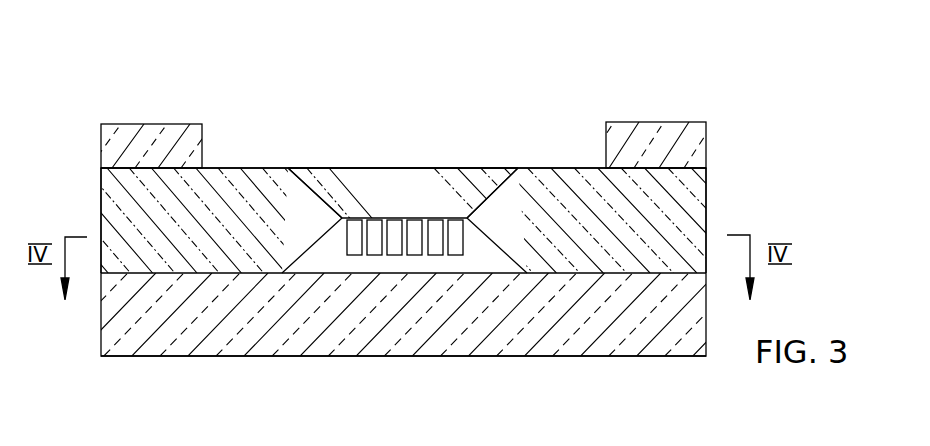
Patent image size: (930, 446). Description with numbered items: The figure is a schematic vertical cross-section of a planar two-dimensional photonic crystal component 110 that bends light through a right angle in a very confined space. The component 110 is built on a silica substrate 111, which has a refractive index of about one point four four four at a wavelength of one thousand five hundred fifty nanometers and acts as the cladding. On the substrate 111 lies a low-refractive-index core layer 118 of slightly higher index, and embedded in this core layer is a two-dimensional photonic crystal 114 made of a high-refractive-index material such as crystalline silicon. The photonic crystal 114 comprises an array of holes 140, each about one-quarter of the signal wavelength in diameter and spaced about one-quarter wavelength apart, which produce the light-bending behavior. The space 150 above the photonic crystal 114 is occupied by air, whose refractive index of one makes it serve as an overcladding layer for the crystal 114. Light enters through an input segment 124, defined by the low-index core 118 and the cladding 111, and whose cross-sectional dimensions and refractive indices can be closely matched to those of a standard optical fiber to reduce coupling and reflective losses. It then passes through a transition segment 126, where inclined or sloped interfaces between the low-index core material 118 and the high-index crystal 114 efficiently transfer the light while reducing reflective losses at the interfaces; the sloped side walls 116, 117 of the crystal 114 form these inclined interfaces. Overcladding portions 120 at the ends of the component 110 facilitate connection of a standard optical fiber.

The two-dimensional photonic crystal component 110 is at (83, 82).
The silica substrate 111 is at (113, 298).
The two-dimensional photonic crystal 114 is at (333, 262).
The first side wall 116 is at (298, 240).
The second side wall 117 is at (500, 247).
The low-refractive-index core layer 118 is at (118, 198).
The overcladding portions 120 is at (158, 127).
The input segment 124 is at (235, 367).
The transition segment 126 is at (360, 161).
The holes 140 is at (437, 237).
The space 150 is at (403, 185).